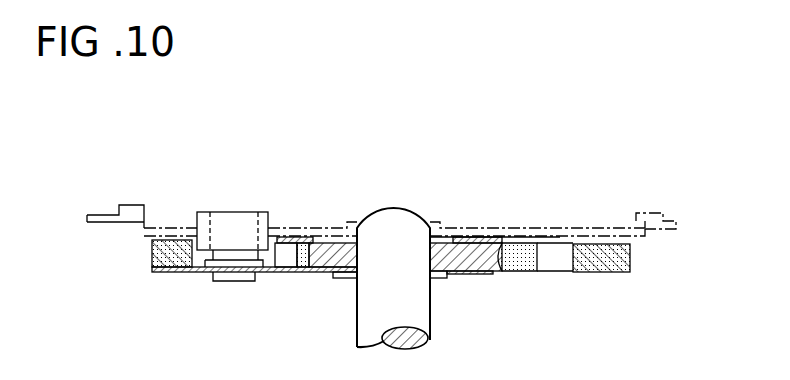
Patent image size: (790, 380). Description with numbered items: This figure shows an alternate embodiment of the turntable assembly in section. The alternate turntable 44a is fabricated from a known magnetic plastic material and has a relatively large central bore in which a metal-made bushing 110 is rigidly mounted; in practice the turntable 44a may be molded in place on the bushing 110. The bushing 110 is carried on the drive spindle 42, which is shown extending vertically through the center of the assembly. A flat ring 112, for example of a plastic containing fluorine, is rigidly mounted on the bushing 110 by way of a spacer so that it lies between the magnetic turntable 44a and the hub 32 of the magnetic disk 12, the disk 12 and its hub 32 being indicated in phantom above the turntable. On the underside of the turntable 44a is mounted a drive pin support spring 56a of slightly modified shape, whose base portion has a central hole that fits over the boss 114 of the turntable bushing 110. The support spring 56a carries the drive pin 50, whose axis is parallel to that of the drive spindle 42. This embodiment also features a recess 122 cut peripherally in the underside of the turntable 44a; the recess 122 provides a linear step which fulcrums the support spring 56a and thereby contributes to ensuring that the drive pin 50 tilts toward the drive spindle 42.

The magnetic disk 12 is at (97, 213).
The hub 32 is at (168, 222).
The drive pin 50 is at (228, 217).
The drive spindle 42 is at (392, 213).
The flat ring 112 is at (472, 237).
The recess 122 is at (152, 264).
The drive pin support spring 56a is at (300, 272).
The boss 114 is at (338, 278).
The bushing 110 is at (498, 275).
The turntable 44a is at (592, 273).